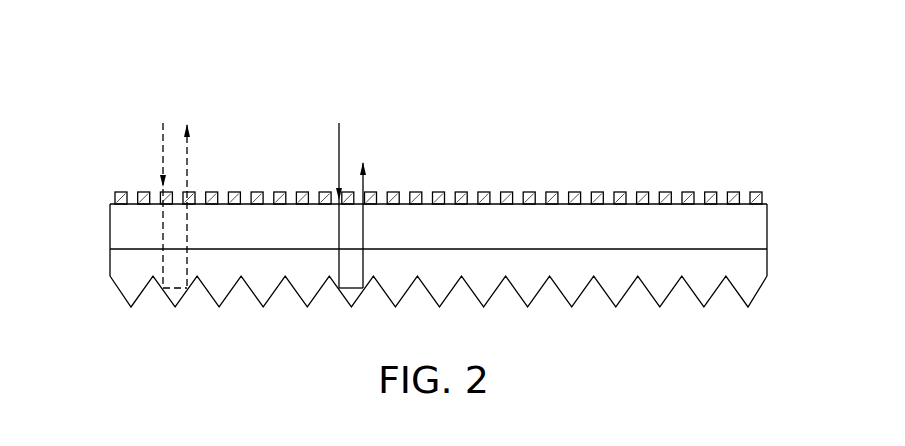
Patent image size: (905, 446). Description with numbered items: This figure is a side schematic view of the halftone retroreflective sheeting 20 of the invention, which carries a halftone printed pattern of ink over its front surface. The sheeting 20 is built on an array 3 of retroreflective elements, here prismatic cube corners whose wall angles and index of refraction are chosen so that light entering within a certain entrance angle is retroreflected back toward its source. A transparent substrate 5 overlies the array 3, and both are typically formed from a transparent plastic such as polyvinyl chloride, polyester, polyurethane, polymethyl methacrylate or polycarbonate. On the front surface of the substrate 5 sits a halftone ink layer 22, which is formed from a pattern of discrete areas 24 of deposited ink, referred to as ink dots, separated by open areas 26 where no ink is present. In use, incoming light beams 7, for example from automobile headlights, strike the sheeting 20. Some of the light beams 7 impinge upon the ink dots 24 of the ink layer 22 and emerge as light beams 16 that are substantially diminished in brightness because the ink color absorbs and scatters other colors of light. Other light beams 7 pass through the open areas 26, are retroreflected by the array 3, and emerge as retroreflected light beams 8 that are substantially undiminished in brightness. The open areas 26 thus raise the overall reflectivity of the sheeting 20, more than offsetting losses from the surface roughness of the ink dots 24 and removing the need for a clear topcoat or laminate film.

The halftone retroreflective sheeting 20 is at (451, 184).
The halftone ink layer 22 is at (492, 163).
The discrete areas of deposited ink 24 is at (460, 192).
The open areas 26 is at (587, 192).
The transparent substrate 5 is at (120, 222).
The array of retroreflective elements 3 is at (128, 292).
The incoming light beams 7 is at (163, 148).
The light beams 16 is at (190, 150).
The retroreflected light beams 8 is at (365, 182).